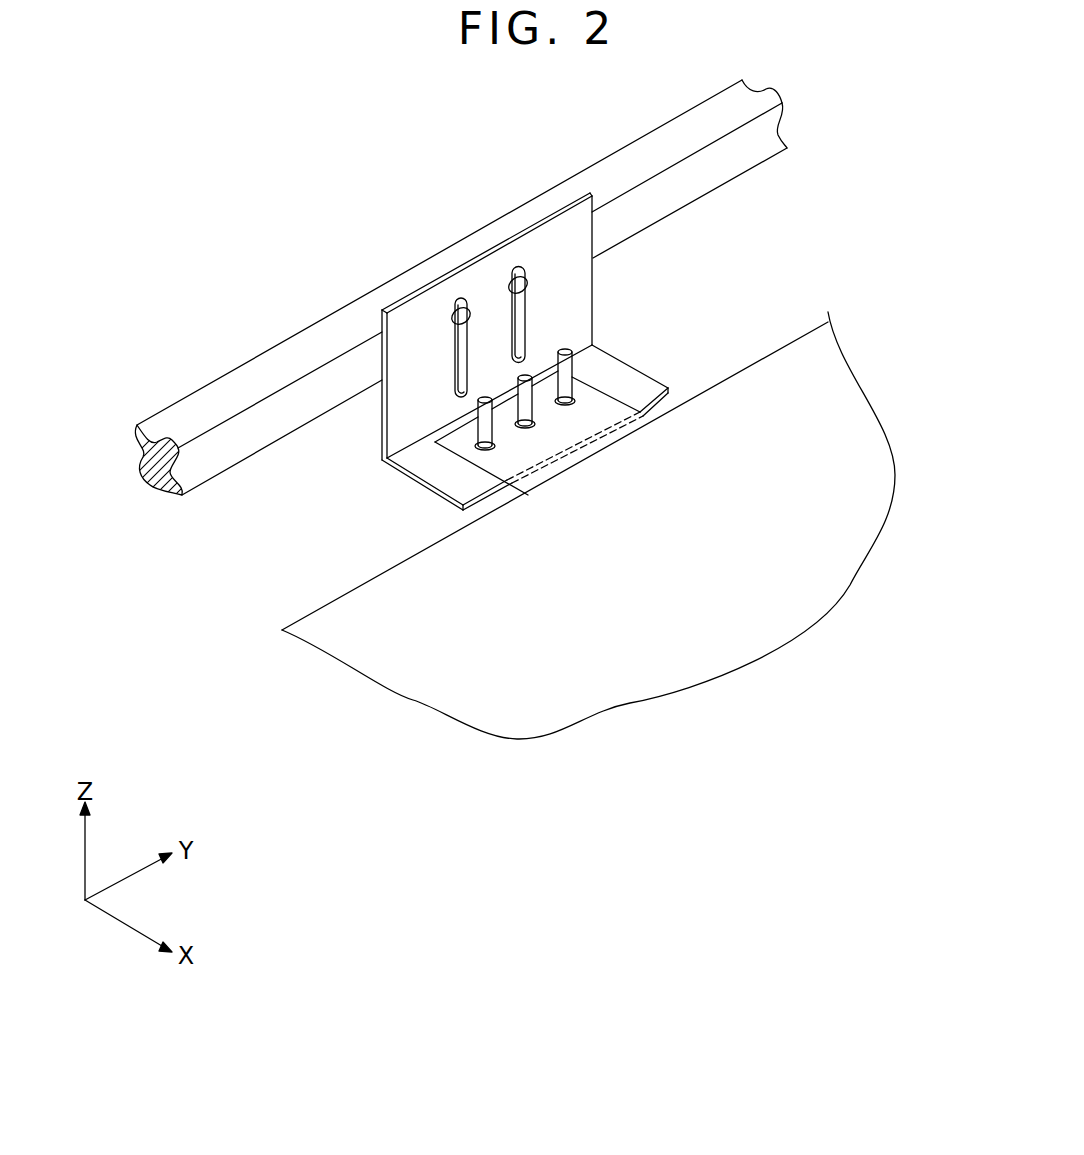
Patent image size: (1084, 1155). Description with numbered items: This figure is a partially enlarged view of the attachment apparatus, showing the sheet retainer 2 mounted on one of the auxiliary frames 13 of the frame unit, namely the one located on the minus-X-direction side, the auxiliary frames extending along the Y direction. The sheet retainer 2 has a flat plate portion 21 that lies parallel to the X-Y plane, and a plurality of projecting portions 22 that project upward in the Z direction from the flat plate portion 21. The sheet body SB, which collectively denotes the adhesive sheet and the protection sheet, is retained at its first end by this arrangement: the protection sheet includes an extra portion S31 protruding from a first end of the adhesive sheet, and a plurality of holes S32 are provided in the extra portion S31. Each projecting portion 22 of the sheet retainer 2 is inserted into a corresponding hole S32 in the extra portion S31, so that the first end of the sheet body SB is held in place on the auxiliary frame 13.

The sheet retainer 2 is at (533, 351).
The auxiliary frame 13 is at (655, 148).
The flat plate portion 21 is at (534, 405).
The projecting portion 22 is at (485, 397).
The extra portion S31 is at (639, 413).
The hole S32 is at (494, 440).
The sheet body SB is at (767, 403).